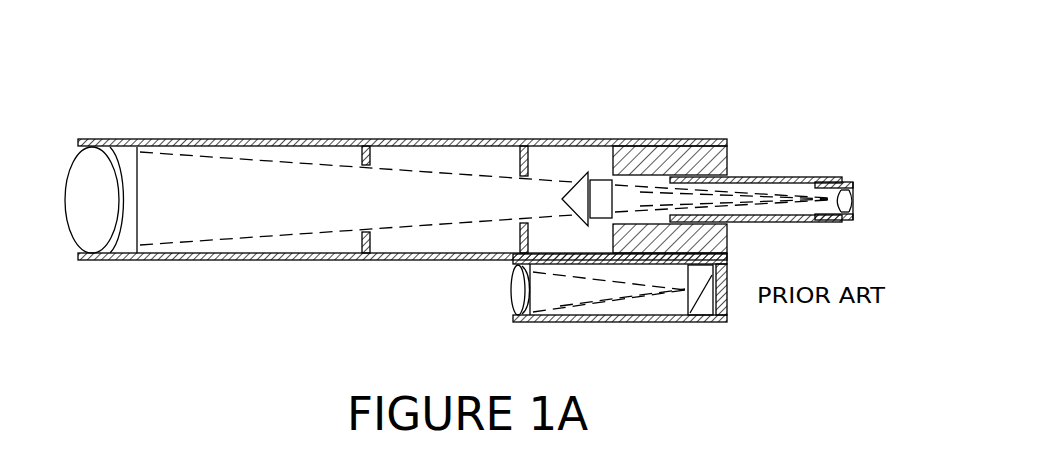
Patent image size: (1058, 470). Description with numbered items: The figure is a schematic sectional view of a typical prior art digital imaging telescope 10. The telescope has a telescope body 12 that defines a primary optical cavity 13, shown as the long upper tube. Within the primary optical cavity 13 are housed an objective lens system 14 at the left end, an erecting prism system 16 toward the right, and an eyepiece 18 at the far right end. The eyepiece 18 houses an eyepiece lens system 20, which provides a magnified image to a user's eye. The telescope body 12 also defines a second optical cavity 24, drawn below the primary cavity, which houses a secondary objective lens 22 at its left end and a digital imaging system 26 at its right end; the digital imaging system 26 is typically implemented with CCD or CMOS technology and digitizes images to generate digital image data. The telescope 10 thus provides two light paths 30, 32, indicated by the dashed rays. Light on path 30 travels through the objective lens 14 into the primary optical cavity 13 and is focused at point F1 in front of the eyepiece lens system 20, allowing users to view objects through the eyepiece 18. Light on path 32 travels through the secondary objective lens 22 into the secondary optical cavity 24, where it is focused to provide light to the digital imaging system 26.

The digital imaging telescope 10 is at (383, 100).
The telescope body 12 is at (255, 142).
The primary optical cavity 13 is at (412, 233).
The objective lens system 14 is at (92, 163).
The erecting prism system 16 is at (603, 178).
The eyepiece 18 is at (853, 166).
The eyepiece lens system 20 is at (853, 201).
The secondary objective lens 22 is at (520, 291).
The optical cavity 24 is at (568, 293).
The digital imaging system 26 is at (700, 290).
The light path 30 is at (440, 173).
The light path 32 is at (643, 297).
The focal point F1 is at (828, 199).